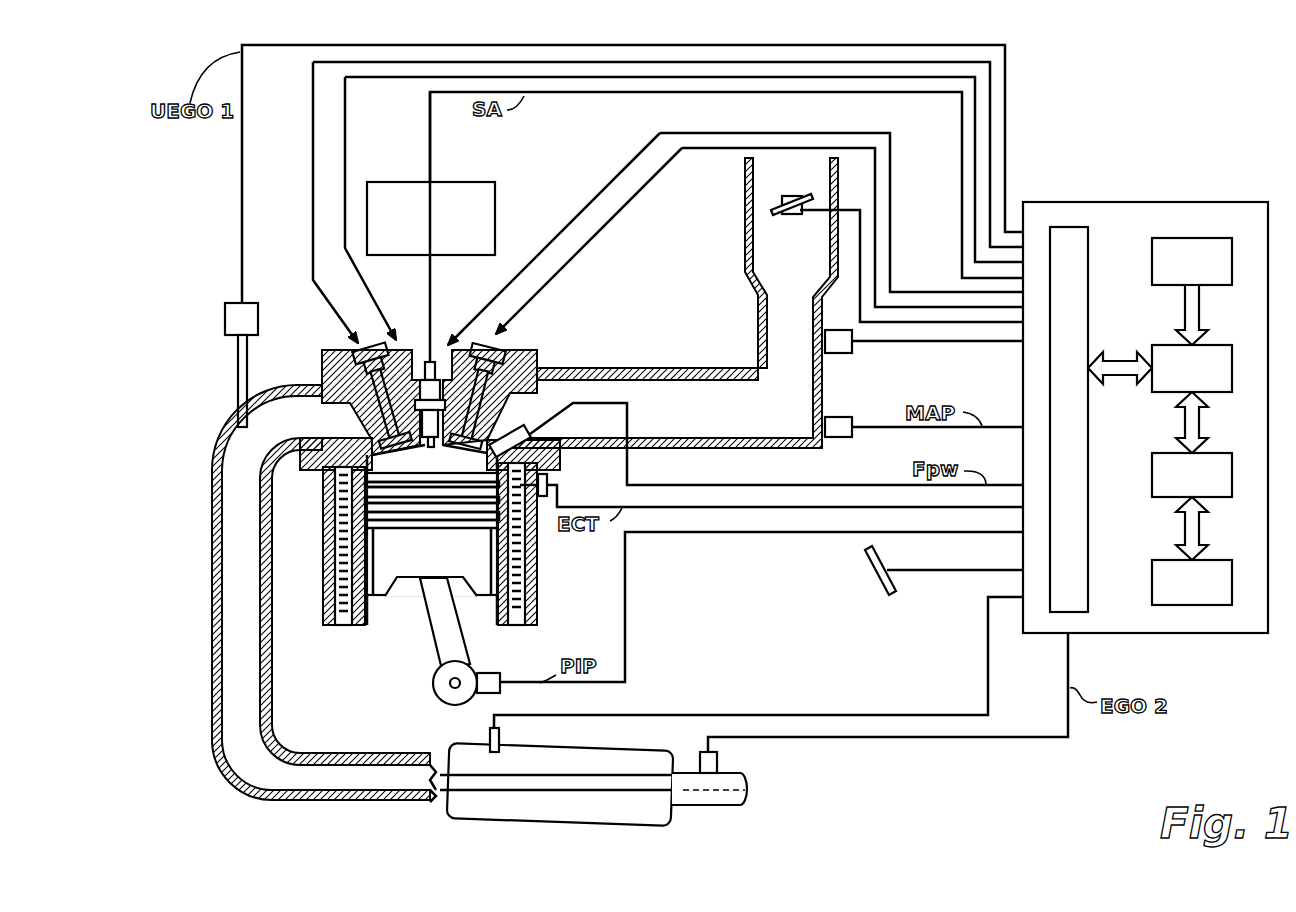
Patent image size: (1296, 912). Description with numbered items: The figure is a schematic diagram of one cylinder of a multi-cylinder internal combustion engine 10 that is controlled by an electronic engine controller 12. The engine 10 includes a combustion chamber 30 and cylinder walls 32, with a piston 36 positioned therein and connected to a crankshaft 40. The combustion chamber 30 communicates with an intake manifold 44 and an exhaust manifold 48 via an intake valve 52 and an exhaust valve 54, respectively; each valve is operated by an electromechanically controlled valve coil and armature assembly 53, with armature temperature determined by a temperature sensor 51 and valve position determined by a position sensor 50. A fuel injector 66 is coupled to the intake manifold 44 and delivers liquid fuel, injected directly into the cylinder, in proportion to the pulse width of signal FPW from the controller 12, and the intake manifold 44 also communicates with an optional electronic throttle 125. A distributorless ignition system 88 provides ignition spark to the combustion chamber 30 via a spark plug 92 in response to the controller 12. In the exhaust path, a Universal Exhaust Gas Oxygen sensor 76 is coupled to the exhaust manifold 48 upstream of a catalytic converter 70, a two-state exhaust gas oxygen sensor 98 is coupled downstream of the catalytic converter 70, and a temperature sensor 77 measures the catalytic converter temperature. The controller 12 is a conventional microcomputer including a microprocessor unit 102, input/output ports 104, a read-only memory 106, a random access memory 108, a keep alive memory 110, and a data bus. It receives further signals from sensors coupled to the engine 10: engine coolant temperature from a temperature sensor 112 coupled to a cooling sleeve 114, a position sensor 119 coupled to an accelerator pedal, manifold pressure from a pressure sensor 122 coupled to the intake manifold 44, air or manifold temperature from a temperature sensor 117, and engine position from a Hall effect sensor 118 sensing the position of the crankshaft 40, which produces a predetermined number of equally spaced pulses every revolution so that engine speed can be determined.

The internal combustion engine 10 is at (327, 345).
The electronic engine controller 12 is at (1145, 404).
The combustion chamber 30 is at (420, 458).
The cylinder walls 32 is at (363, 614).
The piston 36 is at (433, 560).
The crankshaft 40 is at (443, 686).
The intake manifold 44 is at (739, 424).
The exhaust manifold 48 is at (228, 445).
The position sensor 50 is at (394, 339).
The temperature sensor 51 is at (444, 348).
The intake valve 52 is at (488, 432).
The valve coil and armature assembly 53 is at (357, 340).
The exhaust valve 54 is at (377, 428).
The fuel injector 66 is at (548, 432).
The catalytic converter 70 is at (503, 823).
The Universal Exhaust Gas Oxygen (UEGO) sensor 76 is at (263, 284).
The temperature sensor 77 is at (489, 740).
The distributorless ignition system 88 is at (455, 182).
The spark plug 92 is at (421, 361).
The two-state exhaust gas oxygen sensor 98 is at (723, 762).
The microprocessor unit 102 is at (1211, 346).
The input/output ports 104 is at (1090, 272).
The read-only memory 106 is at (1211, 239).
The random access memory 108 is at (1211, 454).
The keep alive memory 110 is at (1208, 561).
The temperature sensor 112 is at (546, 476).
The cooling sleeve 114 is at (342, 627).
The temperature sensor 117 is at (857, 357).
The Hall effect sensor 118 is at (488, 671).
The position sensor 119 is at (876, 583).
The pressure sensor 122 is at (840, 438).
The electronic throttle 125 is at (776, 187).